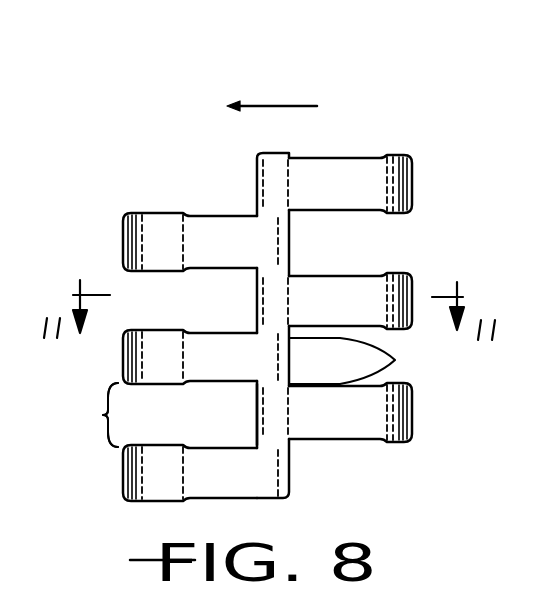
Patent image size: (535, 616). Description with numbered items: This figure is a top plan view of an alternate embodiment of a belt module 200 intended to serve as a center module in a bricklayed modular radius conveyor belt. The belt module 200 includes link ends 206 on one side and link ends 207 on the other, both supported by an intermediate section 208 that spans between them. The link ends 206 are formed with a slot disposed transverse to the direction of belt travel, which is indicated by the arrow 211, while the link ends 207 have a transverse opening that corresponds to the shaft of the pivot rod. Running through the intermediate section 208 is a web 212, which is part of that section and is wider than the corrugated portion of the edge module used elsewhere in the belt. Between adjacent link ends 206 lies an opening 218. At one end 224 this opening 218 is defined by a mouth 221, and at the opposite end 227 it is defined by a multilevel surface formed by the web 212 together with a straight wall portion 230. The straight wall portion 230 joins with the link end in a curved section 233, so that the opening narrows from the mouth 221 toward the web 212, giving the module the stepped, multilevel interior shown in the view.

The belt module 200 is at (257, 78).
The arrow 211 is at (297, 106).
The link ends 207 is at (377, 170).
The link ends 206 is at (158, 230).
The intermediate section 208 is at (263, 238).
The web 212 is at (290, 243).
The straight wall portion 230 is at (273, 353).
The curved section 233 is at (375, 361).
The opposite end 227 is at (240, 400).
The opening 218 is at (90, 400).
The mouth 221 is at (102, 415).
The end 224 is at (106, 461).